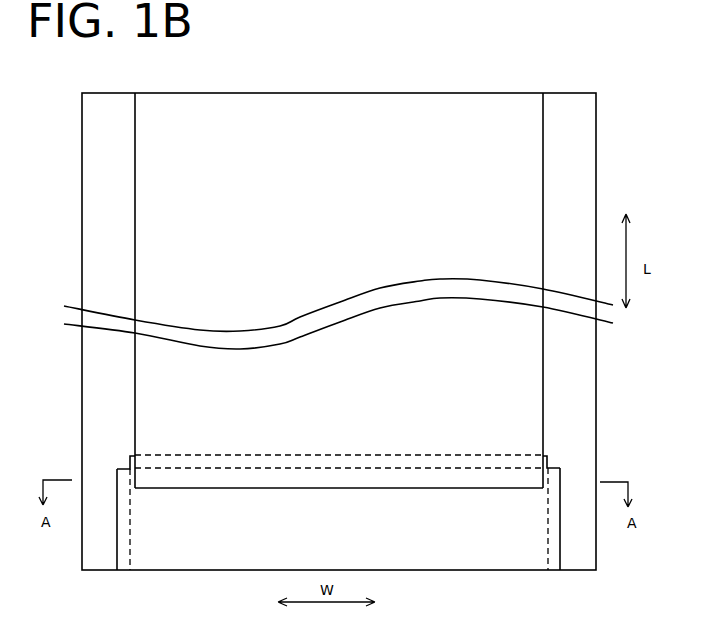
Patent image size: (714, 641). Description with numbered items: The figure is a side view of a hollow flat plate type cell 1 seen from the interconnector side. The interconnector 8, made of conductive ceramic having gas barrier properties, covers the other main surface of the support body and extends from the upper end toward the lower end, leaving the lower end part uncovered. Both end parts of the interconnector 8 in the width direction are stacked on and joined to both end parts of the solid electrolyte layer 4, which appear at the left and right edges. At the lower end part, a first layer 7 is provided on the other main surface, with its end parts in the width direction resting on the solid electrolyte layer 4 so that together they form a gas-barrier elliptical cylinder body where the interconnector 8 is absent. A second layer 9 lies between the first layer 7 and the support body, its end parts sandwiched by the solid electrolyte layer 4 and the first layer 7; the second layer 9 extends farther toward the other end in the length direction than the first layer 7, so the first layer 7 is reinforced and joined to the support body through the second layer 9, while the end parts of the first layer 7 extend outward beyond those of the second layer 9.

The cell 1 is at (384, 93).
The solid electrolyte layer 4 is at (115, 110).
The first layer 7 is at (449, 538).
The interconnector 8 is at (245, 178).
The second layer 9 is at (547, 455).